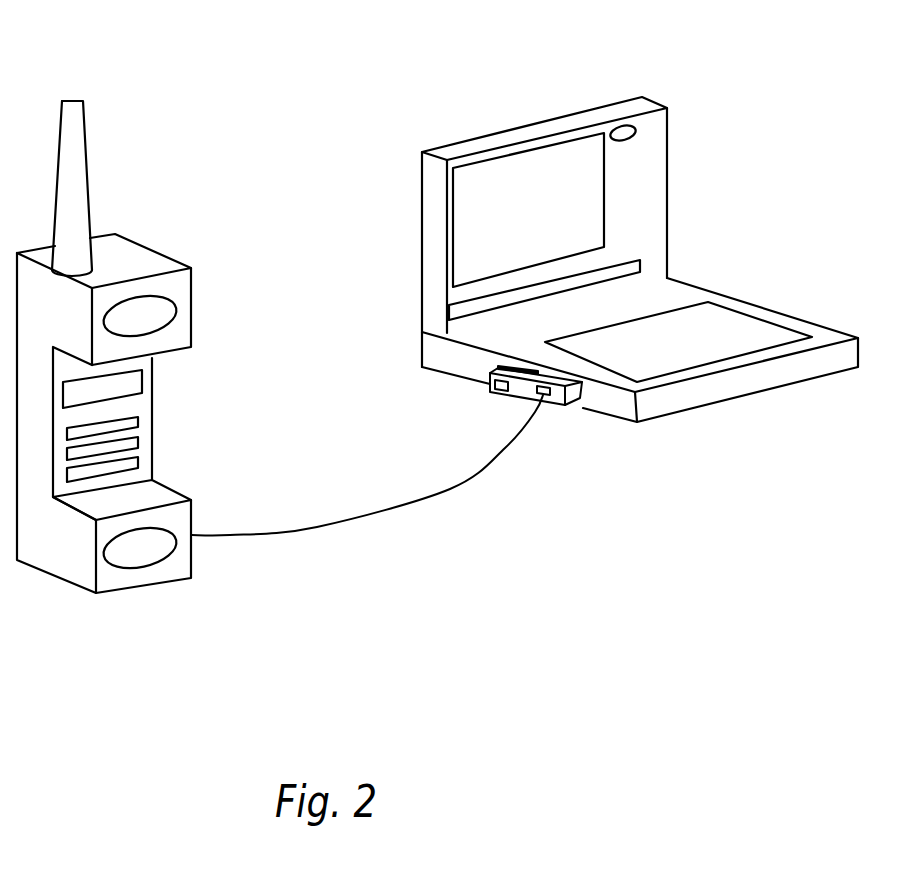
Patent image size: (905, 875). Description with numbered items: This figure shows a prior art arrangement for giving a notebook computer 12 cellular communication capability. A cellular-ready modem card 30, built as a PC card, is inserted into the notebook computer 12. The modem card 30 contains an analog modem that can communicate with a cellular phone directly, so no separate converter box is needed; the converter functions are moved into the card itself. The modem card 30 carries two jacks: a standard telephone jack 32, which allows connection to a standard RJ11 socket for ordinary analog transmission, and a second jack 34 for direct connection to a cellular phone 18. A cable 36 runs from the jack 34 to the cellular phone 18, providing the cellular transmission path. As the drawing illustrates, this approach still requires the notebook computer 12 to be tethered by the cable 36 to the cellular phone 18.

The notebook computer 12 is at (667, 107).
The cellular phone 18 is at (190, 268).
The cellular-ready modem card 30 is at (500, 367).
The standard telephone jack 32 is at (490, 392).
The jack 34 is at (545, 395).
The cable 36 is at (317, 527).